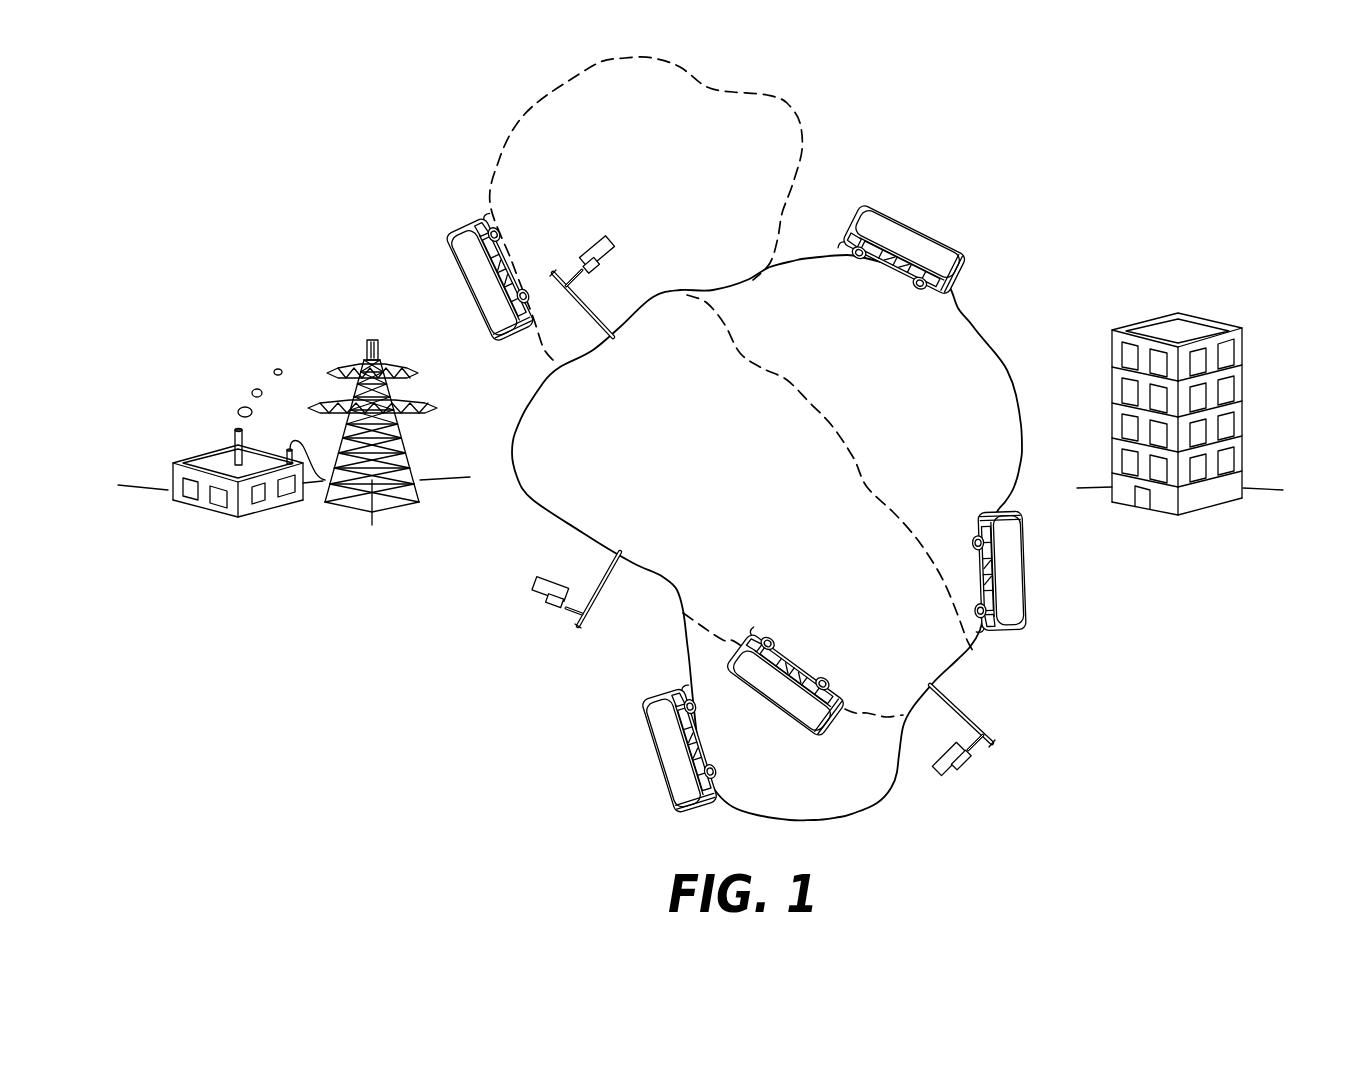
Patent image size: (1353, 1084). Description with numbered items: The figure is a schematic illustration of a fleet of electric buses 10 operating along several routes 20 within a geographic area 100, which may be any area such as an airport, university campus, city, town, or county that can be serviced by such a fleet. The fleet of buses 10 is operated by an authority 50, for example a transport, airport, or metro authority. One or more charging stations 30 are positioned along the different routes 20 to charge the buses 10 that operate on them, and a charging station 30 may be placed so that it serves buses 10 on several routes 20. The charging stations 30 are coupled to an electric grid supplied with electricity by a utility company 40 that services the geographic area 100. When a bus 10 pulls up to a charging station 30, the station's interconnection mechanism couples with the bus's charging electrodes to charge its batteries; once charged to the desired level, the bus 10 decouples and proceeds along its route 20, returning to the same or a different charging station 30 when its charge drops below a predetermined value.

The electric bus 10 is at (455, 268).
The route 20 is at (782, 212).
The charging station 30 is at (610, 240).
The utility company 40 is at (401, 358).
The authority 50 is at (1225, 300).
The geographic area 100 is at (1004, 114).